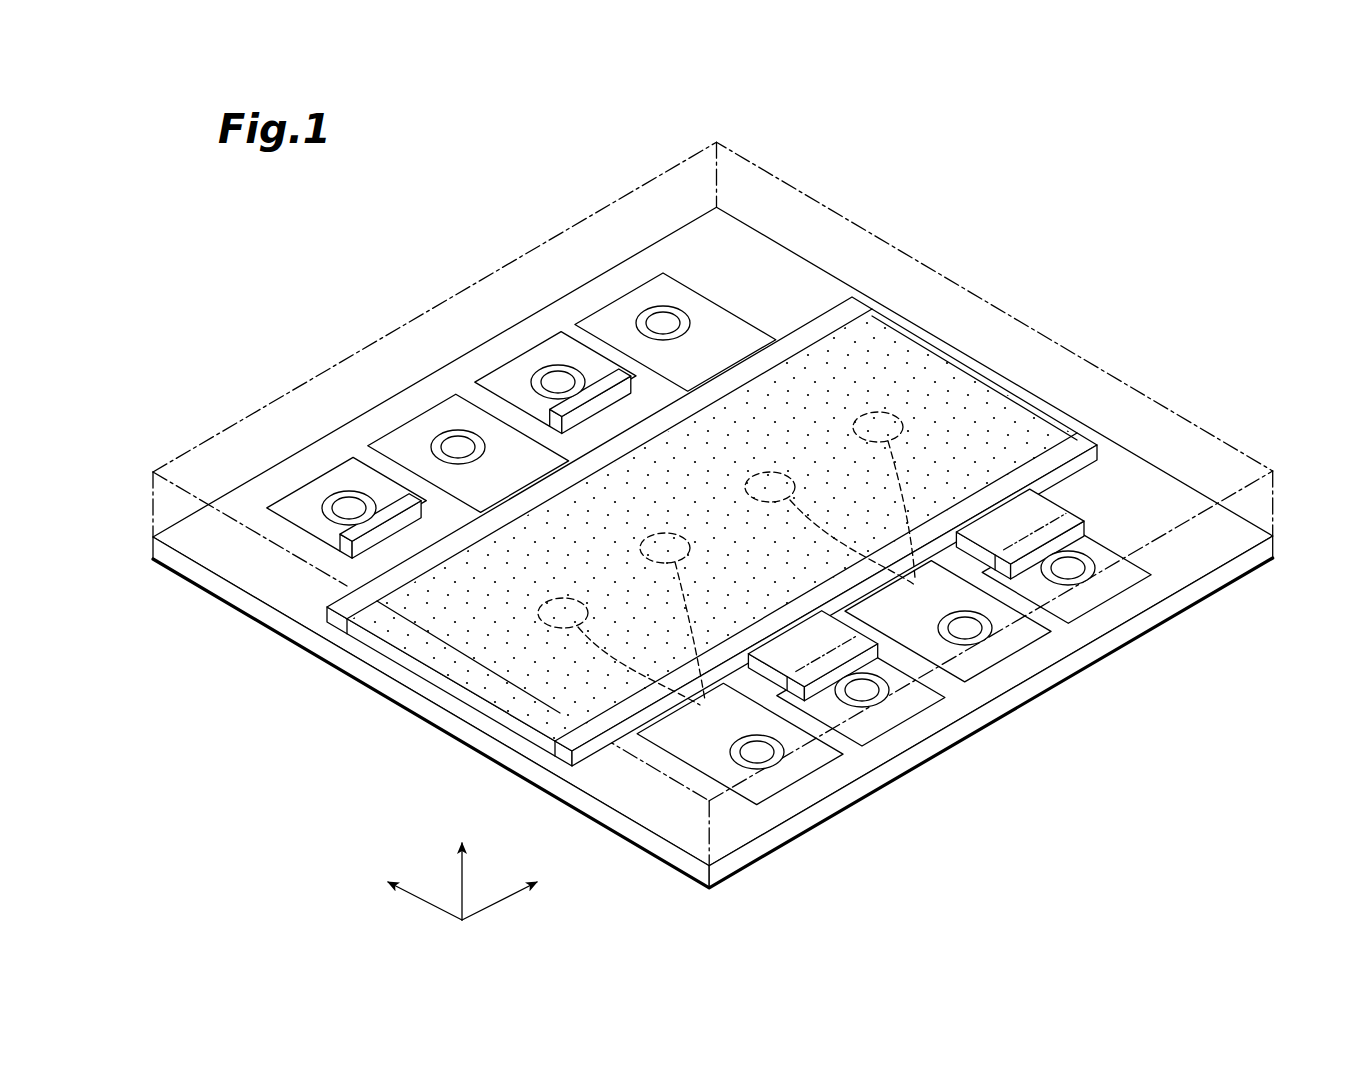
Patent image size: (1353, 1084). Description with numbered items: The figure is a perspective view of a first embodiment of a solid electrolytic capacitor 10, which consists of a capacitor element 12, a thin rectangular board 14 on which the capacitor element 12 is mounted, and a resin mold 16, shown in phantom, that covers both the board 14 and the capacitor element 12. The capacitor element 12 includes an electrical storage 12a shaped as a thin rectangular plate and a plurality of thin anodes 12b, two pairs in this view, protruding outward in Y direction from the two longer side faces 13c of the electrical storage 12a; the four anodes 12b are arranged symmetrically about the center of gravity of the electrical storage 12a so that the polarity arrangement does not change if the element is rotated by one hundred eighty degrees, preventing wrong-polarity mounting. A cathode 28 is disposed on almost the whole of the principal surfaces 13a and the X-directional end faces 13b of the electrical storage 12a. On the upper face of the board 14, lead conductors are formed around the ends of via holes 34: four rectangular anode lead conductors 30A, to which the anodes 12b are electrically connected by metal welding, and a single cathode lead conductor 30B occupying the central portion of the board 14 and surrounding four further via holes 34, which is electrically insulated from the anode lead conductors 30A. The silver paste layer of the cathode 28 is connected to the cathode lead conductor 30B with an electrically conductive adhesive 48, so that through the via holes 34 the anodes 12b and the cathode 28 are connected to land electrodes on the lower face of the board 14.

The solid electrolytic capacitor 10 is at (1078, 262).
The capacitor element 12 is at (713, 547).
The electrical storage 12a is at (1057, 455).
The anodes 12b is at (620, 405).
The principal surfaces 13a is at (685, 517).
The X-directional end faces 13b is at (1032, 398).
The longer side faces 13c is at (607, 757).
The board 14 is at (1124, 435).
The resin mold 16 is at (815, 192).
The cathode 28 is at (805, 370).
The anode lead conductors 30A is at (350, 458).
The cathode lead conductor 30B is at (705, 735).
The via holes 34 is at (655, 310).
The electrically conductive adhesive 48 is at (745, 572).